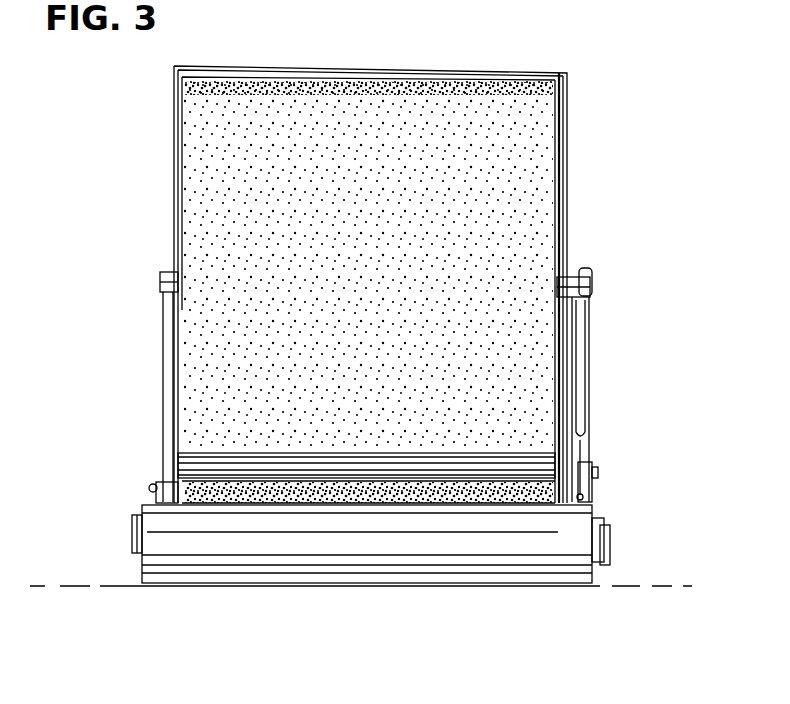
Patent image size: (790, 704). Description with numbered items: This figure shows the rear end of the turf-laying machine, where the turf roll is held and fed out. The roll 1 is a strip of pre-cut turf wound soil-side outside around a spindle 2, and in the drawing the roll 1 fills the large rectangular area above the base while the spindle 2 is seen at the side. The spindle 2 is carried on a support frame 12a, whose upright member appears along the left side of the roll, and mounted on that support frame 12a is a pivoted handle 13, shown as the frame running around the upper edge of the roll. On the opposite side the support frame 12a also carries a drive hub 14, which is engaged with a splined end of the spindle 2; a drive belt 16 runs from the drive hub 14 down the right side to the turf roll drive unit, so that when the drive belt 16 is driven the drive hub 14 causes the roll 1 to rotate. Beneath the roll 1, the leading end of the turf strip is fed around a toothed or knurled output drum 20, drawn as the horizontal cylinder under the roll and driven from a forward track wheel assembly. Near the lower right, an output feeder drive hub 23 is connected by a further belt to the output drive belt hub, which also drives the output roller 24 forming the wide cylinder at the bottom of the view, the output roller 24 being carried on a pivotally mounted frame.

The roll 1 is at (535, 148).
The spindle 2 is at (160, 278).
The support frame 12a is at (165, 343).
The pivoted handle 13 is at (567, 100).
The drive hub 14 is at (592, 283).
The drive belt 16 is at (590, 365).
The output drum 20 is at (210, 465).
The output feeder drive hub 23 is at (597, 473).
The output roller 24 is at (175, 537).